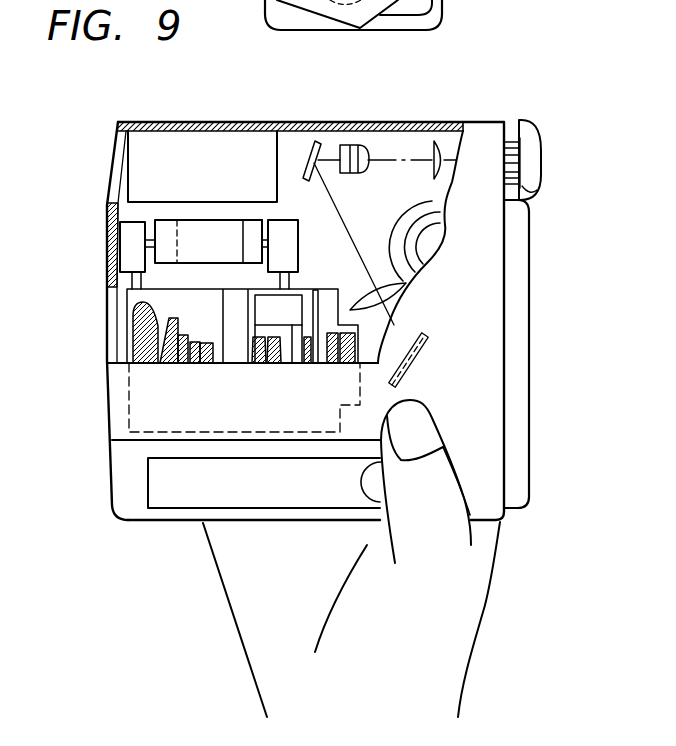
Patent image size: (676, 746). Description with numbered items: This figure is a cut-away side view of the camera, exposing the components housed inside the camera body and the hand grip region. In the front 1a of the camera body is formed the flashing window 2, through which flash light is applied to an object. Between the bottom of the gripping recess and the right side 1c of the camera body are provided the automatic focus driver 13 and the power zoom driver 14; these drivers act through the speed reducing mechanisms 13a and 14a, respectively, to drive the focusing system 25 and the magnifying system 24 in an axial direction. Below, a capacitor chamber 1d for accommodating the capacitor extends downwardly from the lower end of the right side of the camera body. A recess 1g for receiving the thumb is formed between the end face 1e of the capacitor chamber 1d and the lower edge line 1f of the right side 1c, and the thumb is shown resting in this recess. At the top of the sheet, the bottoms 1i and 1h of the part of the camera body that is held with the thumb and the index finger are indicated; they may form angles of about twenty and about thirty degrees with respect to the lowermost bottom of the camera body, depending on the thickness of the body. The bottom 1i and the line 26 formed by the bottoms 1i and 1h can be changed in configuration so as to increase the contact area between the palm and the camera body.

The flashing window 2 is at (187, 143).
The automatic focus driver 13 is at (205, 230).
The speed reducing mechanism 13a is at (130, 242).
The power zoom driver 14 is at (253, 230).
The speed reducing mechanism 14a is at (298, 241).
The magnifying system 24 is at (312, 291).
The focusing system 25 is at (135, 299).
The line 26 is at (182, 522).
The front of the camera body 1a is at (108, 267).
The right side of the camera body 1c is at (492, 274).
The capacitor chamber 1d is at (170, 495).
The end face of the capacitor chamber 1e is at (372, 488).
The lower edge line of the right side 1f is at (458, 462).
The recess for receiving the thumb 1g is at (460, 486).
The bottom of the camera body 1h is at (376, 20).
The bottom of the camera body 1i is at (317, 16).